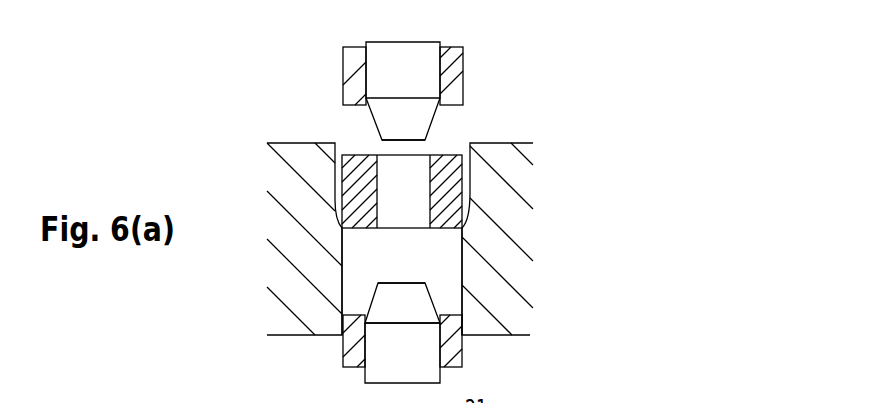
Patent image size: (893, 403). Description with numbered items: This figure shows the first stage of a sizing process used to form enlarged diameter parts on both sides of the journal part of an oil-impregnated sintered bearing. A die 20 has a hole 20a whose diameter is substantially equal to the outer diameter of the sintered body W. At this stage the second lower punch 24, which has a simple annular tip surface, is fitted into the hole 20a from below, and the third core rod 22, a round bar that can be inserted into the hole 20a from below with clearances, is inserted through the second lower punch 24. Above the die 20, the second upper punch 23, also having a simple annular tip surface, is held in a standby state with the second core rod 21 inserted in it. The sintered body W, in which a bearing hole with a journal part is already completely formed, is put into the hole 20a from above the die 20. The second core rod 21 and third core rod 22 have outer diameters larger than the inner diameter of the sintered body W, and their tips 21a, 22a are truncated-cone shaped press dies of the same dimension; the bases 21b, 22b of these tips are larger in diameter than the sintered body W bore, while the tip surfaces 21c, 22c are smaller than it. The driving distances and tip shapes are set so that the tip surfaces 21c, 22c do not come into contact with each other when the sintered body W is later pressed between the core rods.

The die 20 is at (507, 152).
The hole 20a is at (343, 263).
The sintered body W is at (362, 152).
The second core rod 21 is at (427, 47).
The tip 21a is at (434, 122).
The base 21b is at (422, 97).
The tip surface 21c is at (392, 141).
The second upper punch 23 is at (350, 66).
The third core rod 22 is at (375, 372).
The tip 22a is at (417, 293).
The base 22b is at (417, 322).
The tip surface 22c is at (393, 283).
The second lower punch 24 is at (450, 342).